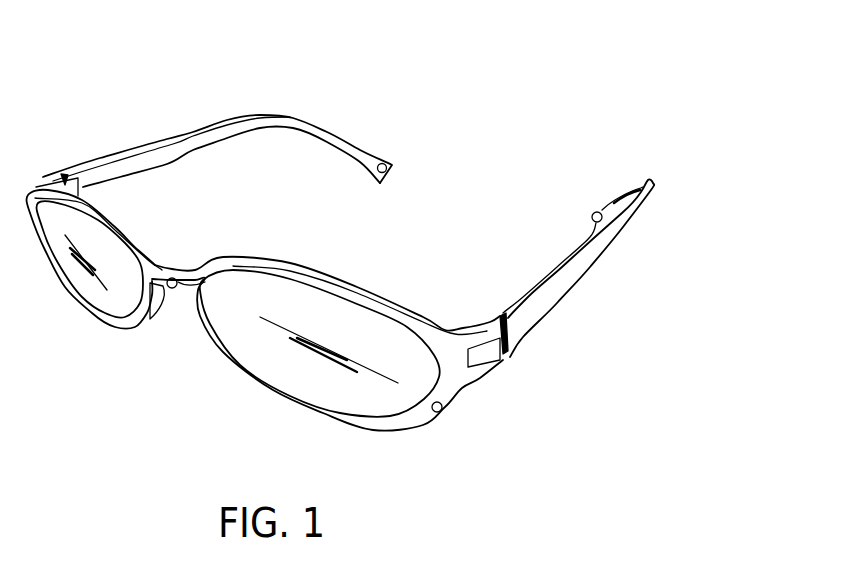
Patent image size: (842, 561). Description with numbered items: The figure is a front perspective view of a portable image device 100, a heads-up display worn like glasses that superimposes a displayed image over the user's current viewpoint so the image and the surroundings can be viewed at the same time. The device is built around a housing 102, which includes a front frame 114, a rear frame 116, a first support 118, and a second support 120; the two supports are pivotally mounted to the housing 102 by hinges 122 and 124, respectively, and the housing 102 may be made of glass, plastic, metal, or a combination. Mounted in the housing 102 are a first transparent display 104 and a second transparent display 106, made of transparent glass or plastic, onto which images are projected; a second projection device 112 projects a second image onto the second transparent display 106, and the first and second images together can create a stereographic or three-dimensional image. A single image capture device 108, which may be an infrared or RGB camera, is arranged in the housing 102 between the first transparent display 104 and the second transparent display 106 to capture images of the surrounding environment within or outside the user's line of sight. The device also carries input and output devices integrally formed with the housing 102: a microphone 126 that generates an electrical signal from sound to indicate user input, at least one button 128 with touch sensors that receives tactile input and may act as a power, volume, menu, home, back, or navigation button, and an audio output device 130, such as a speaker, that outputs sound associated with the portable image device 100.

The portable image device 100 is at (545, 102).
The housing 102 is at (128, 152).
The first transparent display 104 is at (333, 363).
The second transparent display 106 is at (93, 277).
The image capture device 108 is at (151, 322).
The second projection device 112 is at (63, 180).
The front frame 114 is at (190, 295).
The rear frame 116 is at (183, 266).
The first support 118 is at (180, 143).
The second support 120 is at (555, 296).
The hinge 122 is at (501, 314).
The hinge 124 is at (72, 180).
The microphone 126 is at (440, 412).
The button 128 is at (488, 354).
The audio output device 130 is at (383, 163).